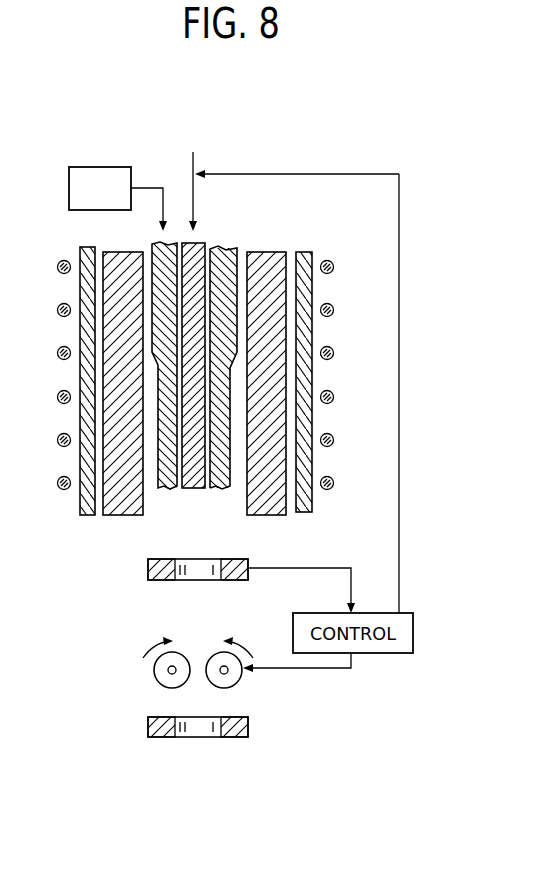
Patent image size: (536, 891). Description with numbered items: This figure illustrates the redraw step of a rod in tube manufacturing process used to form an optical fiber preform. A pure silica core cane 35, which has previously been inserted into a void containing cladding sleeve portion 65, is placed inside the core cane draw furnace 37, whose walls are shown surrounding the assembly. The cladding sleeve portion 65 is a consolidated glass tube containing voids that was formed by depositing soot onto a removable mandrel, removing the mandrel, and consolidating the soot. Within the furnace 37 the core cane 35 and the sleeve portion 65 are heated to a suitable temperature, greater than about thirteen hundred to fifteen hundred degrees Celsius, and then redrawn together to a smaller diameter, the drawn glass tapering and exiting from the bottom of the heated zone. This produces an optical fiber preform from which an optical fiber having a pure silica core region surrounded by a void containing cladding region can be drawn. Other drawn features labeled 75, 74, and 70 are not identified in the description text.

The chlorine gas source 75 is at (90, 167).
The outer cladding glass layer 74 is at (224, 249).
The core cane draw furnace 37 is at (292, 248).
The void containing cladding sleeve portion 65 is at (155, 323).
The drawn core portion 70 is at (155, 437).
The core cane 35 is at (152, 379).